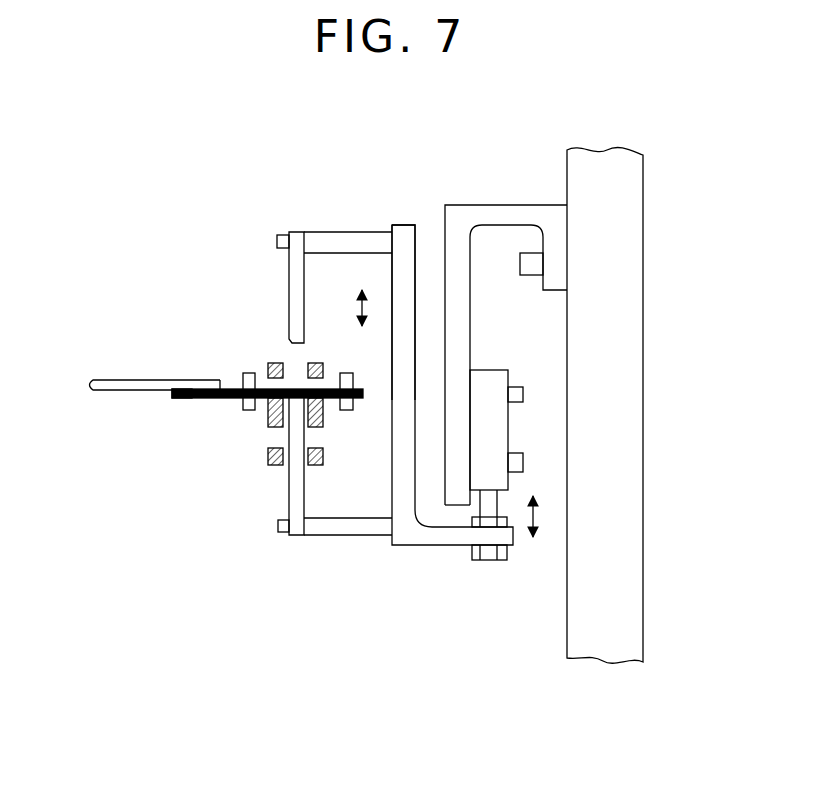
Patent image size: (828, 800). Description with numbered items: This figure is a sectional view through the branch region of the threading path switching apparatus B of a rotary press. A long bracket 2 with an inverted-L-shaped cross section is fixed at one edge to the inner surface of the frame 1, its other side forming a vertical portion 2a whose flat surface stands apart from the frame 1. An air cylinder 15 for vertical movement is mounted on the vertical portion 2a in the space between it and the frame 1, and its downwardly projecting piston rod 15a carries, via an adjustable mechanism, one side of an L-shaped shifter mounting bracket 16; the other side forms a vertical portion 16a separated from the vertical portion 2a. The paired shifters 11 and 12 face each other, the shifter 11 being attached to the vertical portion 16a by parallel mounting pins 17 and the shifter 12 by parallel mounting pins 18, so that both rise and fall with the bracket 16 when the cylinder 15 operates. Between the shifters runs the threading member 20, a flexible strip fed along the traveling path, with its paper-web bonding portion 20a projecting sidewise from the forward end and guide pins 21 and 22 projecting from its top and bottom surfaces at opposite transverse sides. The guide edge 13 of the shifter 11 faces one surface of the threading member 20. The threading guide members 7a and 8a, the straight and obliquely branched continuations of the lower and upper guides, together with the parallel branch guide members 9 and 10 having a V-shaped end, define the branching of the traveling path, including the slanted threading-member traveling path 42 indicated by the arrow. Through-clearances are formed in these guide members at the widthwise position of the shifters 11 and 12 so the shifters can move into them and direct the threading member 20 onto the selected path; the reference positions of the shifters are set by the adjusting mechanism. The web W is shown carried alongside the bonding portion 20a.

The frame 1 is at (567, 160).
The bracket 2 is at (482, 205).
The vertical portion 2a is at (458, 322).
The threading guide member 7a is at (307, 465).
The threading guide member 8a is at (310, 368).
The threading guide member 9 is at (268, 423).
The threading guide member 10 is at (307, 422).
The shifter 11 is at (297, 247).
The shifter 12 is at (297, 518).
The guide edge 13 is at (288, 348).
The air cylinder 15 is at (495, 372).
The piston rod 15a is at (497, 502).
The shifter mounting bracket 16 is at (433, 547).
The vertical portion 16a is at (402, 238).
The mounting pins 17 is at (328, 242).
The mounting pins 18 is at (317, 532).
The threading member 20 is at (232, 390).
The paper-web bonding portion 20a is at (177, 398).
The guide pins 21 is at (345, 407).
The guide pins 22 is at (241, 410).
The slanted threading-member traveling path 42 is at (325, 378).
The threading path switching apparatus B is at (198, 194).
The workpiece W is at (130, 387).